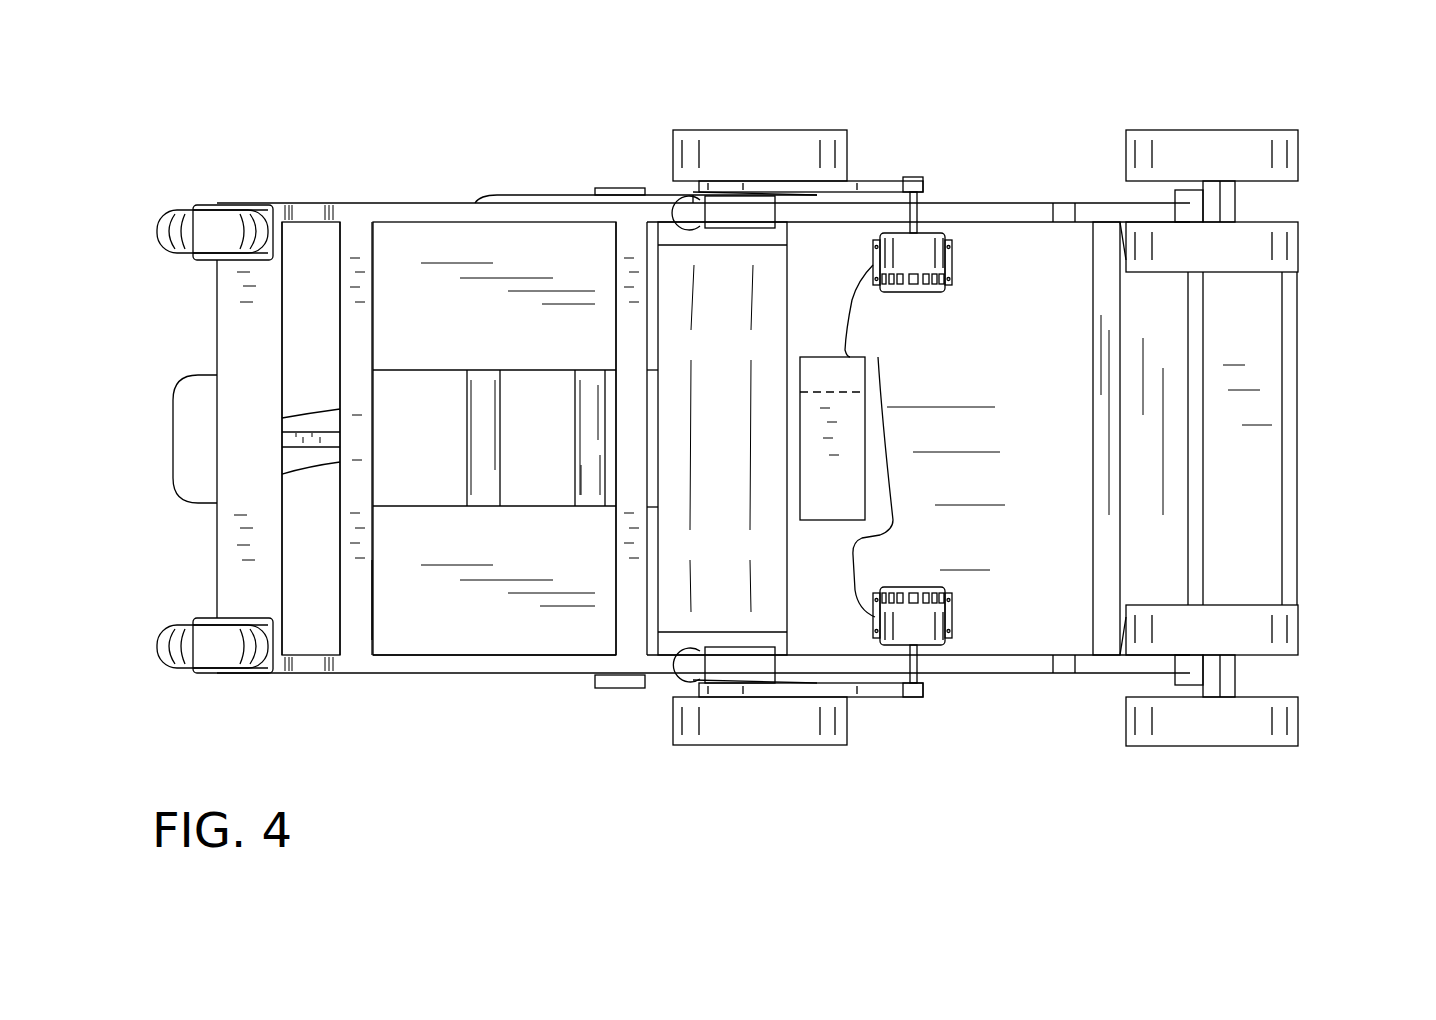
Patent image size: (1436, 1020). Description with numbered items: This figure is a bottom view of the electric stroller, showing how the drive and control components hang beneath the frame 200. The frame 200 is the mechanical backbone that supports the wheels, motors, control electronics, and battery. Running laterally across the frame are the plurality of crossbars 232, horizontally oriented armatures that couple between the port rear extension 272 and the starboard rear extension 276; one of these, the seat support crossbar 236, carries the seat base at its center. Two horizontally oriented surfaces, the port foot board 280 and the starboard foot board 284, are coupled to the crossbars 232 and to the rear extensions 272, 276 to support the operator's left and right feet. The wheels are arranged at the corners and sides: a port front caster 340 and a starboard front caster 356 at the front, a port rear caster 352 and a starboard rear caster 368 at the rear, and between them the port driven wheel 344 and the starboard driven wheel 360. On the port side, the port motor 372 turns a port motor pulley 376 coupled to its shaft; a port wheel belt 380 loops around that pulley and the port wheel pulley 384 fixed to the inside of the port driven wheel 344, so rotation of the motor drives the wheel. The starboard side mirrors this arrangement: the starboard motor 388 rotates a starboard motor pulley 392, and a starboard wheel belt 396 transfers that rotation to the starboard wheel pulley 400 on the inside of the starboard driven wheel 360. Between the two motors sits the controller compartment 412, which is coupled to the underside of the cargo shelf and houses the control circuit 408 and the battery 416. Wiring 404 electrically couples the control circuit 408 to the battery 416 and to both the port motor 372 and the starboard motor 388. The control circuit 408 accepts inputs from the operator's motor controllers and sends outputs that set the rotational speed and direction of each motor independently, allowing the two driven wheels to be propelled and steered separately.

The frame 200 is at (340, 665).
The plurality of crossbars 232 is at (627, 315).
The seat support crossbar 236 is at (367, 598).
The port rear extension 272 is at (487, 665).
The starboard rear extension 276 is at (462, 210).
The port foot board 280 is at (548, 630).
The starboard foot board 284 is at (543, 228).
The port front caster 340 is at (1208, 735).
The port driven wheel 344 is at (797, 735).
The port rear caster 352 is at (183, 645).
The starboard front caster 356 is at (1205, 165).
The starboard driven wheel 360 is at (778, 145).
The starboard rear caster 368 is at (178, 220).
The port motor 372 is at (928, 640).
The port motor pulley 376 is at (913, 700).
The port wheel belt 380 is at (876, 698).
The port wheel pulley 384 is at (735, 685).
The starboard motor 388 is at (935, 245).
The starboard motor pulley 392 is at (915, 178).
The starboard wheel belt 396 is at (875, 183).
The starboard wheel pulley 400 is at (725, 195).
The wiring 404 is at (893, 486).
The control circuit 408 is at (848, 378).
The controller compartment 412 is at (803, 493).
The battery 416 is at (853, 440).